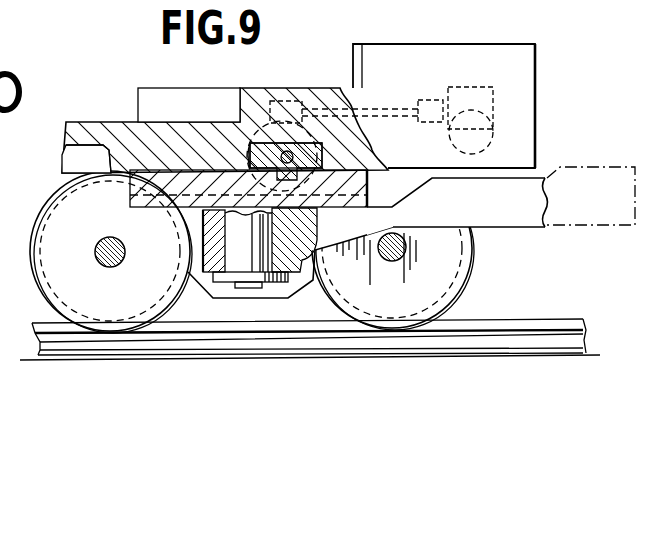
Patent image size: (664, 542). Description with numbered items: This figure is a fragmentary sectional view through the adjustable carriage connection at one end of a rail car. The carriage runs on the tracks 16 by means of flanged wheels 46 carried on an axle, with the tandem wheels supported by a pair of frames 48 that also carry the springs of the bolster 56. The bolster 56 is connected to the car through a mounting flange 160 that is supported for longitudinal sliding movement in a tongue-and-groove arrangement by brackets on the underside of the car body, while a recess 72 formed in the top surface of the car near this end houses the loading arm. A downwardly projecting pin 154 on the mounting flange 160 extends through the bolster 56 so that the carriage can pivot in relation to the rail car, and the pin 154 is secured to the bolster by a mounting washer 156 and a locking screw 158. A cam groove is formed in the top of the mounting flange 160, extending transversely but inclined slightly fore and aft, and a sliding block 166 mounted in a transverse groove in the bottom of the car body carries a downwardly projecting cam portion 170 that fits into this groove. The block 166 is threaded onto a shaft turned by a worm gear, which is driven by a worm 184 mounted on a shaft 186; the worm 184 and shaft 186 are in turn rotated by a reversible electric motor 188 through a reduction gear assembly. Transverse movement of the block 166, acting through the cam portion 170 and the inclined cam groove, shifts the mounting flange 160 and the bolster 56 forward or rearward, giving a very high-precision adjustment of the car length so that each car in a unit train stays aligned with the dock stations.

The tracks 16 is at (540, 318).
The flanged wheels 46 is at (36, 237).
The frames 48 is at (304, 283).
The bolster 56 is at (528, 218).
The recesses 72 is at (186, 73).
The downwardly projecting pin 154 is at (315, 220).
The mounting washer 156 is at (226, 280).
The screw 158 is at (258, 294).
The mounting flange 160 is at (168, 213).
The sliding block 166 is at (250, 140).
The cam portion 170 is at (262, 187).
The worm 184 is at (271, 93).
The shaft 186 is at (397, 105).
The electric motor 188 is at (492, 138).